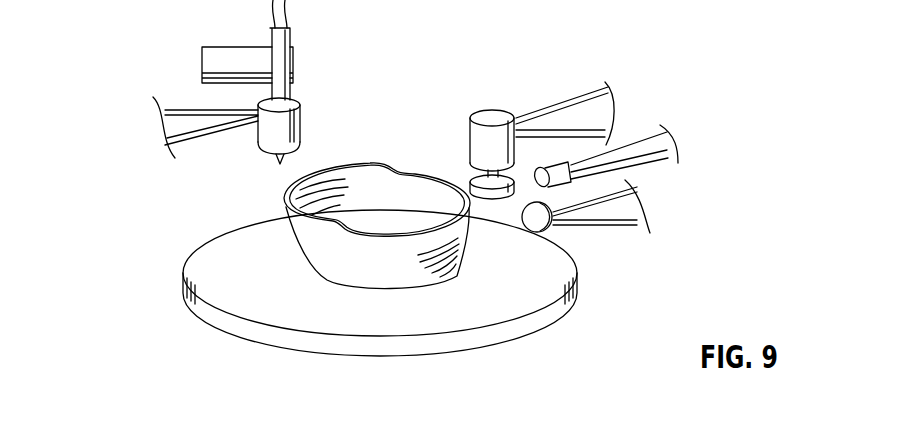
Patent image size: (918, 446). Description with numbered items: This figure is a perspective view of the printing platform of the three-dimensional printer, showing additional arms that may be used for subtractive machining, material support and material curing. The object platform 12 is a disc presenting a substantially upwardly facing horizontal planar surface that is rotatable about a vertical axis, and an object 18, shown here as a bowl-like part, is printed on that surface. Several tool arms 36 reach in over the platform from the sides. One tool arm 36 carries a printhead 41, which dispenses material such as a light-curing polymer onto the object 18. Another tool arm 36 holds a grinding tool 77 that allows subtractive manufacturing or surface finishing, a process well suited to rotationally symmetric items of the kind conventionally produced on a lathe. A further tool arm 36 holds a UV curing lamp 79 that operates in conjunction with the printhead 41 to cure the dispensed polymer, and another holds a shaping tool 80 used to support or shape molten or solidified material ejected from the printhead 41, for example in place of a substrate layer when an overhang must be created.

The object platform 12 is at (457, 320).
The object 18 is at (388, 163).
The tool arms 36 is at (193, 128).
The printhead 41 is at (297, 120).
The grinding tool 77 is at (493, 112).
The UV curing lamp 79 is at (618, 176).
The shaping tool 80 is at (555, 229).